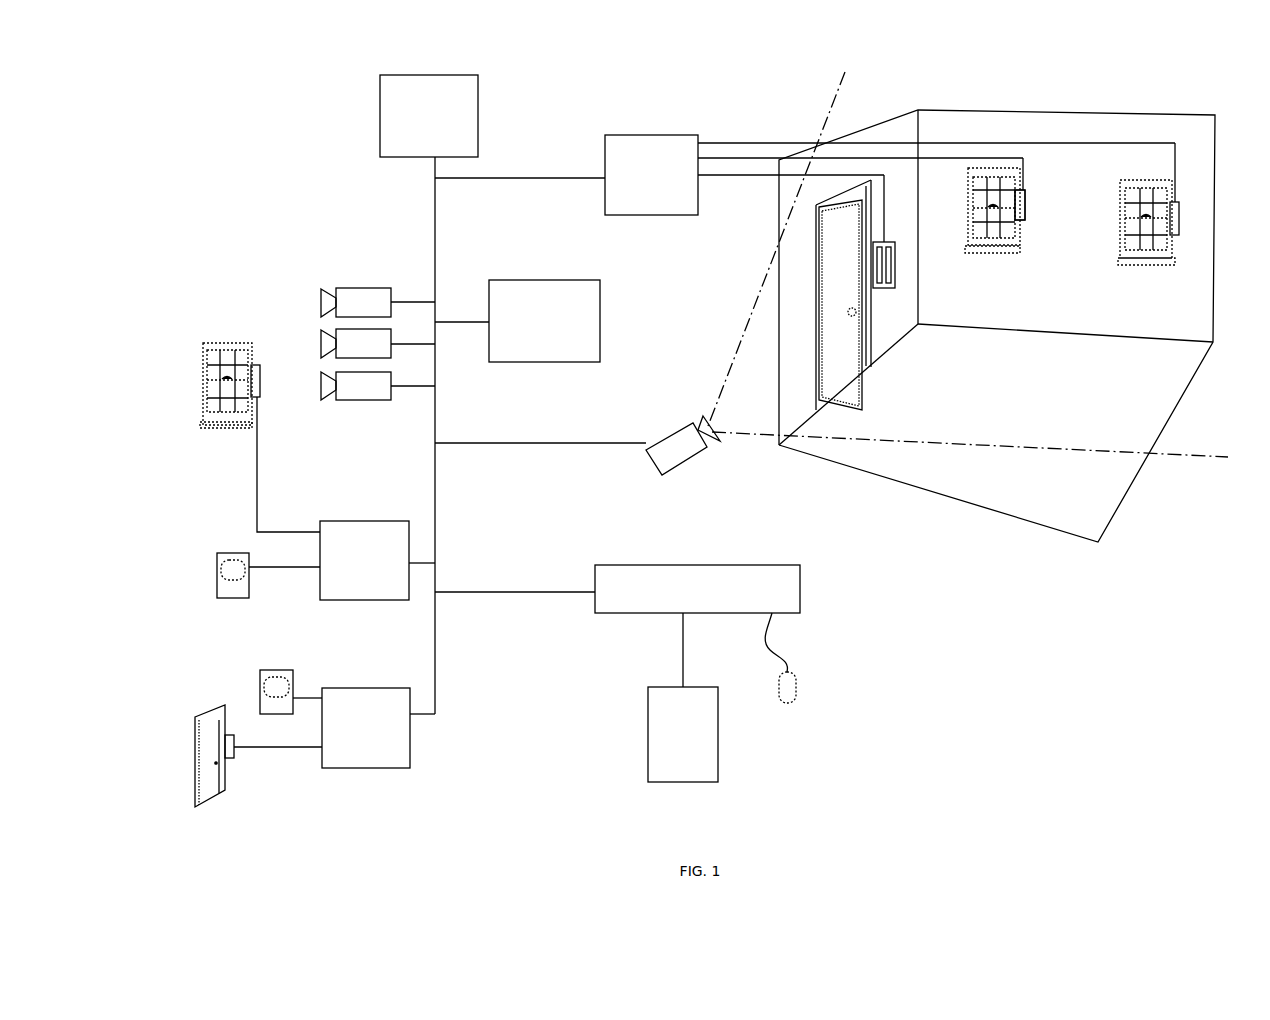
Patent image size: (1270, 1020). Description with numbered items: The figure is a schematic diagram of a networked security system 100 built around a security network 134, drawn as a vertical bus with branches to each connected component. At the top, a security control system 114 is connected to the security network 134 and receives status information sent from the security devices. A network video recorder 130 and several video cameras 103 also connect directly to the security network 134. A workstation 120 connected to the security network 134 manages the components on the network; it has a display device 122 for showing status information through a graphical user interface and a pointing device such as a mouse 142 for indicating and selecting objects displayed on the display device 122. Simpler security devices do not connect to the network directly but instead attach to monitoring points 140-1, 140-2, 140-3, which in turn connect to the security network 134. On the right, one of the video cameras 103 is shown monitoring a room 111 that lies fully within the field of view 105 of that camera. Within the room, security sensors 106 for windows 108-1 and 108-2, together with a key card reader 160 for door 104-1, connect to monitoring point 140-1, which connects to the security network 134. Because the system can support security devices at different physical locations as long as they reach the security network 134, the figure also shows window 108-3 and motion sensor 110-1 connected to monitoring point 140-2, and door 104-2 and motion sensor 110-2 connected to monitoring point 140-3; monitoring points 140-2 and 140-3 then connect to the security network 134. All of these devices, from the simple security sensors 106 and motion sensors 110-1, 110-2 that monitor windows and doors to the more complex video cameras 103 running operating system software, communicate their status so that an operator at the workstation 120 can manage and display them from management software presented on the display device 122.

The networked security system 100 is at (1056, 700).
The video camera 103 is at (722, 497).
The door 104-1 is at (838, 372).
The door 104-2 is at (222, 790).
The field of view 105 is at (826, 107).
The security sensor 106 is at (1020, 222).
The window 108-1 is at (1148, 265).
The window 108-2 is at (998, 250).
The window 108-3 is at (231, 343).
The motion sensor 110-1 is at (249, 541).
The motion sensor 110-2 is at (272, 670).
The room 111 is at (1093, 488).
The security control system 114 is at (429, 116).
The workstation 120 is at (697, 626).
The display device 122 is at (683, 734).
The network video recorder 130 is at (544, 321).
The security network 134 is at (435, 213).
The monitoring point 140-1 is at (890, 188).
The monitoring point 140-2 is at (364, 560).
The monitoring point 140-3 is at (366, 728).
The mouse 142 is at (796, 690).
The key card reader 160 is at (884, 288).